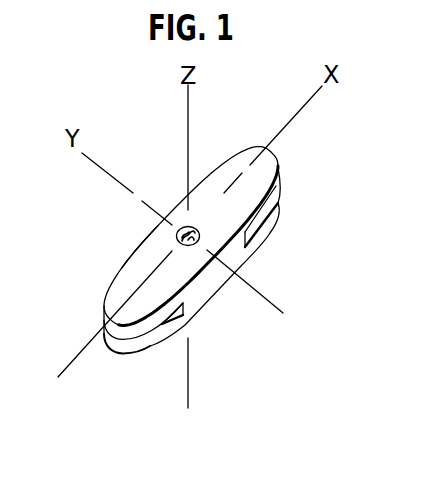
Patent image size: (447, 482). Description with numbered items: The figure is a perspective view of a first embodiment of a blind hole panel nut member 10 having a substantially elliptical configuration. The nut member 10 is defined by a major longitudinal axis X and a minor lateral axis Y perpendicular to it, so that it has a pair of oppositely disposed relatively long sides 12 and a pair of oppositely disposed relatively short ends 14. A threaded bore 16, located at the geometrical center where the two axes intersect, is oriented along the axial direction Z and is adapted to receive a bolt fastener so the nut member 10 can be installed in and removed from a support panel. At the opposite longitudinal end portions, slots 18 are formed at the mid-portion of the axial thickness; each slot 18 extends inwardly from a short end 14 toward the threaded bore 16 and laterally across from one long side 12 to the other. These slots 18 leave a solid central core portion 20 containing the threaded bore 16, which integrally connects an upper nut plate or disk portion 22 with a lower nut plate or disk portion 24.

The blind hole panel nut member 10 is at (215, 124).
The relatively long side 12 is at (142, 250).
The relatively short end 14 is at (258, 150).
The threaded bore 16 is at (127, 256).
The slot 18 is at (282, 198).
The solid central core portion 20 is at (260, 267).
The upper nut plate or disk portion 22 is at (225, 220).
The lower nut plate or disk portion 24 is at (273, 228).